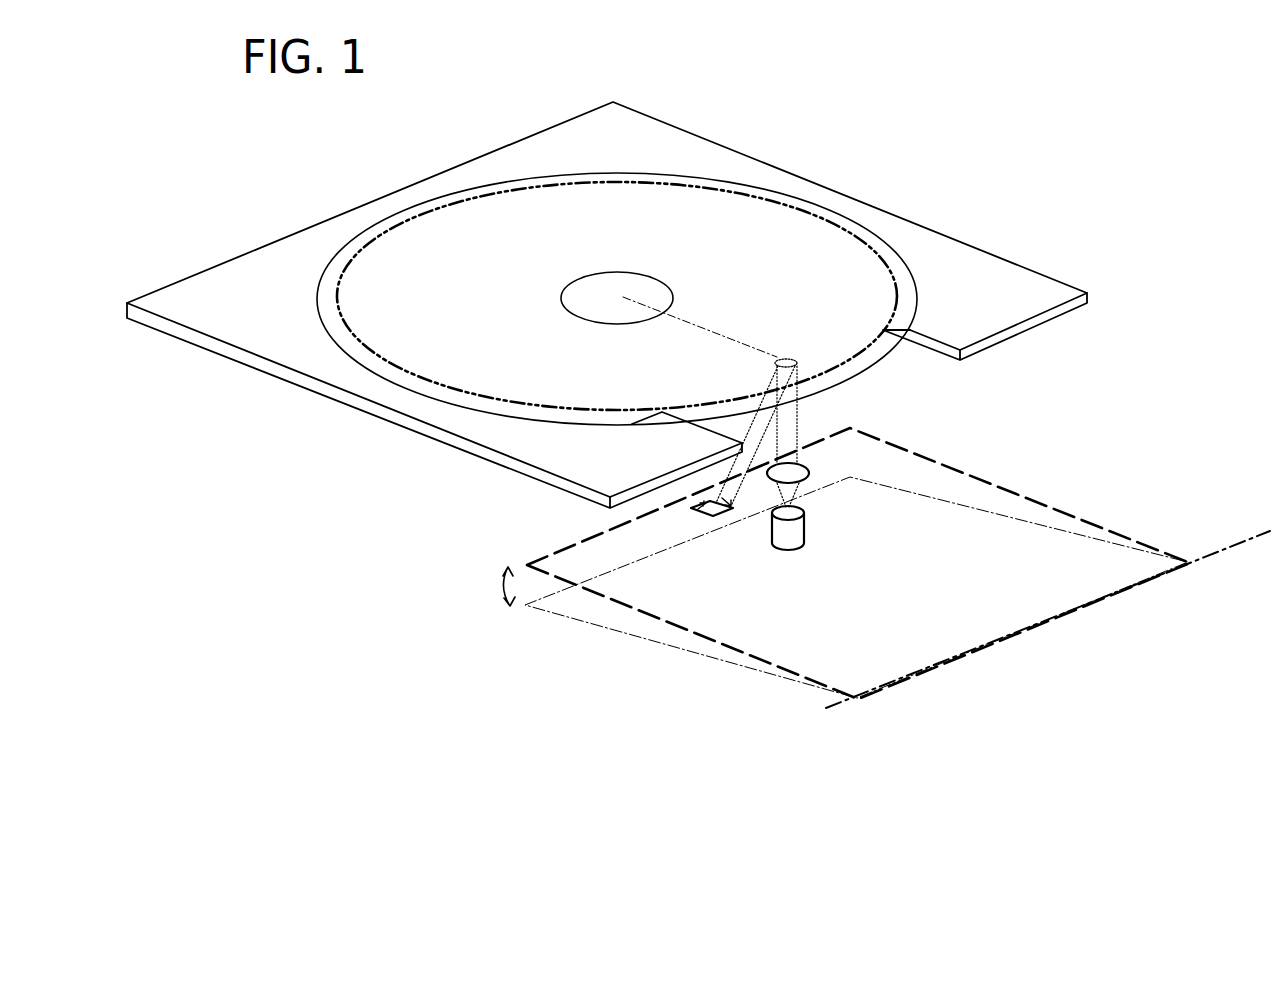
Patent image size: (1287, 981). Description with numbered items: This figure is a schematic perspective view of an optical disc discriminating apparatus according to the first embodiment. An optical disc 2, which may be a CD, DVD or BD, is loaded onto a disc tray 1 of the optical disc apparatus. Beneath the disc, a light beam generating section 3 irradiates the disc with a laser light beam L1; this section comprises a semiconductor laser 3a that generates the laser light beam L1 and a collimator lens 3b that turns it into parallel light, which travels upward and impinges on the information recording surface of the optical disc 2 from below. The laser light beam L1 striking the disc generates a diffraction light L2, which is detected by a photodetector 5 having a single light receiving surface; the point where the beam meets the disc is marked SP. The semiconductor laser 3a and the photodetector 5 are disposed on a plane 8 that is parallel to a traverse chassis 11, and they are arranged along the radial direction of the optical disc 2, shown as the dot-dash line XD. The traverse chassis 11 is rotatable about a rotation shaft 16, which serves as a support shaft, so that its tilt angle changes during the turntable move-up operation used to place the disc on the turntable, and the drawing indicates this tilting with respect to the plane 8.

The disc tray 1 is at (385, 420).
The optical disc 2 is at (780, 200).
The light beam generating section 3 is at (715, 636).
The semiconductor laser 3a is at (785, 548).
The collimator lens 3b is at (775, 480).
The photodetector 5 is at (693, 510).
The plane 8 is at (1097, 530).
The traverse chassis 11 is at (590, 603).
The rotation shaft 16 is at (1137, 592).
The radial direction XD is at (700, 327).
The light spot SP is at (787, 366).
The laser light beam L1 is at (800, 485).
The diffraction light L2 is at (780, 353).